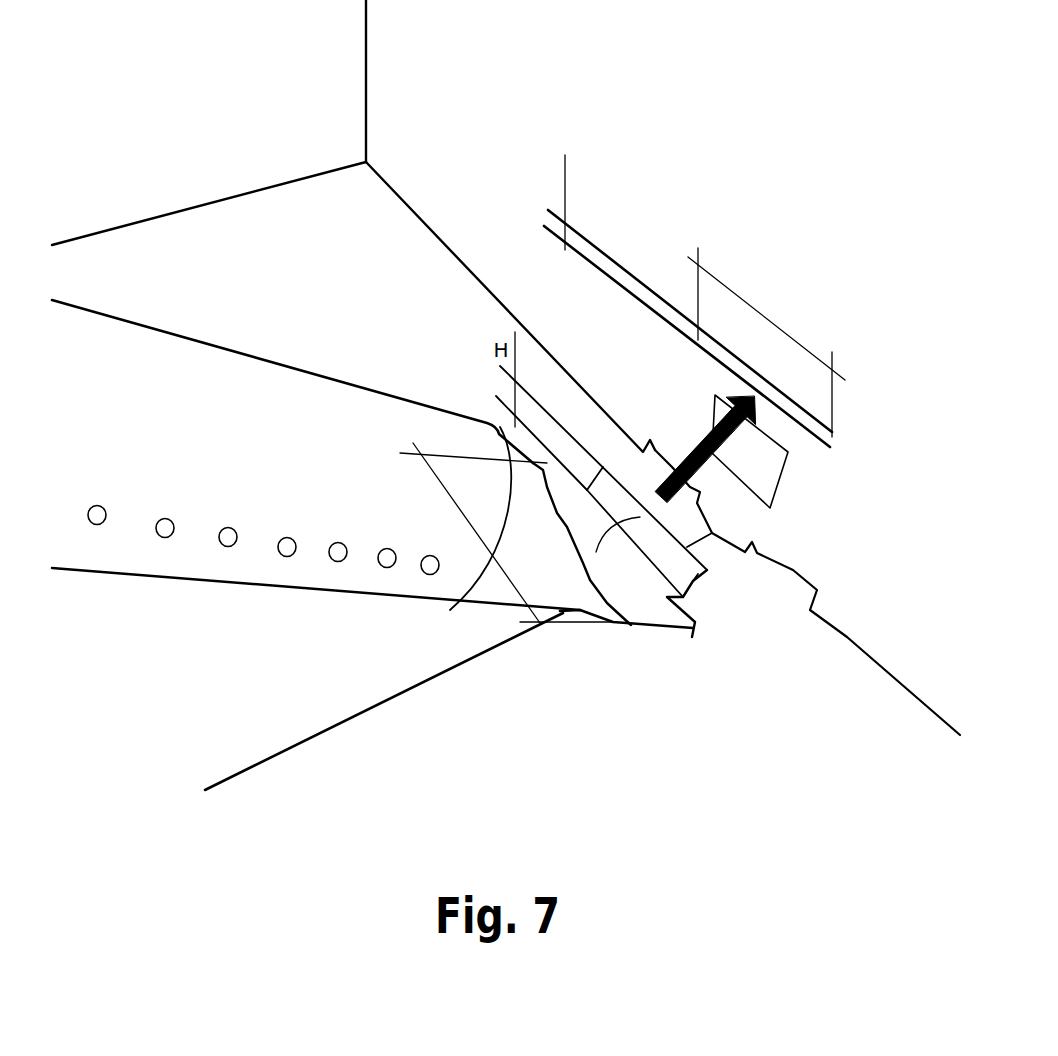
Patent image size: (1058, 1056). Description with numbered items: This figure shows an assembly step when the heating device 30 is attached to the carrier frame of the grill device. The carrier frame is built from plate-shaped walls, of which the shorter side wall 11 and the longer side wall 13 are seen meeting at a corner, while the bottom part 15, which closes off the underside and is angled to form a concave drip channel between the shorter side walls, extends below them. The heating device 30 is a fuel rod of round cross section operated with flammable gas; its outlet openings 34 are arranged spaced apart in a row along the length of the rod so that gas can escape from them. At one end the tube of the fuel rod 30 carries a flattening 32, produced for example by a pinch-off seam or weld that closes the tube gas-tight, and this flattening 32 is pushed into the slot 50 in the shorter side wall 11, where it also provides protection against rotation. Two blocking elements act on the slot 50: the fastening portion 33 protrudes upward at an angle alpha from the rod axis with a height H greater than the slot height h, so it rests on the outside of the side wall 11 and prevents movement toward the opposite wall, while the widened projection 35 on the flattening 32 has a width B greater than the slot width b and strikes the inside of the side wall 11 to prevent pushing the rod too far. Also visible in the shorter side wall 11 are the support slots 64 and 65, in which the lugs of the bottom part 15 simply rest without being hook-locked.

The shorter side wall 11 is at (392, 143).
The longer side wall 13 is at (350, 61).
The bottom part 15 is at (308, 215).
The heating device 30 is at (367, 403).
The flattening 32 is at (620, 588).
The fastening portion 33 is at (697, 578).
The outlet opening 34 is at (95, 505).
The widened projection 35 is at (690, 630).
The slot 50 is at (832, 437).
The support slot 64 is at (667, 455).
The support slot 65 is at (800, 572).